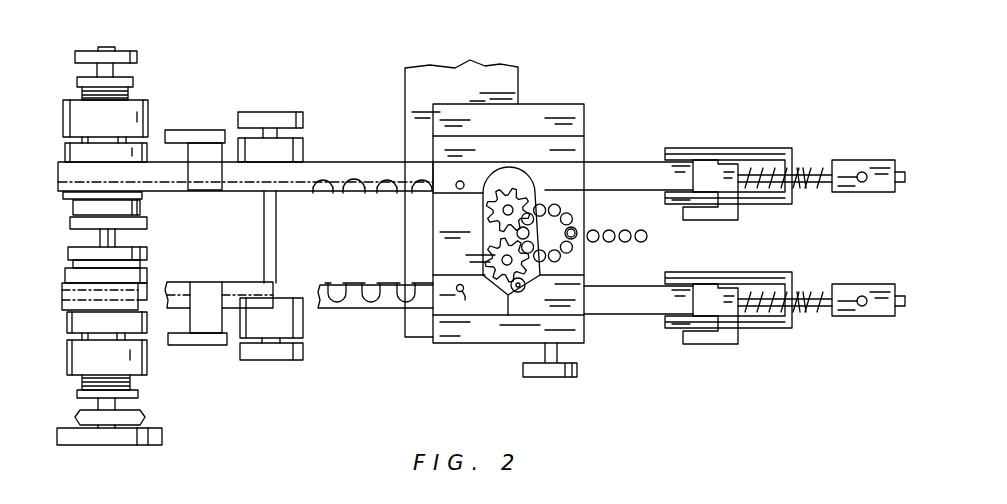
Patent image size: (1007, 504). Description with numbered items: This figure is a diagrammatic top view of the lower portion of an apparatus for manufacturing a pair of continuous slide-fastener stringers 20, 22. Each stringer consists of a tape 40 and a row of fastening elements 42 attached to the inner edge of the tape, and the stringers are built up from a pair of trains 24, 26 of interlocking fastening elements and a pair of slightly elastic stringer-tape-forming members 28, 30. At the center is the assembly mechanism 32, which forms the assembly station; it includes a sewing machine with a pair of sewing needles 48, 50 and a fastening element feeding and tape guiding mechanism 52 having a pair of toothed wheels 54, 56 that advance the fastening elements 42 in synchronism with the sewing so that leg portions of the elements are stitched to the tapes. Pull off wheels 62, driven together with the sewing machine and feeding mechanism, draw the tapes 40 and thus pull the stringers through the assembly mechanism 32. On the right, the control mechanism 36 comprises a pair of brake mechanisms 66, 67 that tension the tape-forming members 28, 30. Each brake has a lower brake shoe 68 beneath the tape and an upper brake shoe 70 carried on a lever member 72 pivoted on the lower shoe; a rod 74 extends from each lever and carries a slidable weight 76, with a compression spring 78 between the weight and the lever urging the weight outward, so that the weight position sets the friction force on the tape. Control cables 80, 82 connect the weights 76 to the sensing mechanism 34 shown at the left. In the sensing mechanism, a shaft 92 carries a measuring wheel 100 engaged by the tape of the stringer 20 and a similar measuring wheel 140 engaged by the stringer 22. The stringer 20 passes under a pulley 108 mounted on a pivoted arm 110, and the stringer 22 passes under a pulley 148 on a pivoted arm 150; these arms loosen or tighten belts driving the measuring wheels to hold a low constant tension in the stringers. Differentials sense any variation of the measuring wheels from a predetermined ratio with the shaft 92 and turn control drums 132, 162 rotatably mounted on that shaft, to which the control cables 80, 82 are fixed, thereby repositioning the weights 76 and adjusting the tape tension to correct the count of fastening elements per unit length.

The stringer 20 is at (339, 268).
The stringer 22 is at (345, 152).
The train of interlocking fastening elements 24 is at (572, 264).
The train of interlocking fastening elements 26 is at (574, 212).
The stringer-tape-forming member 28 is at (625, 295).
The stringer-tape-forming member 30 is at (612, 174).
The assembly mechanism 32 is at (558, 78).
The sensing mechanism 34 is at (112, 36).
The control mechanism 36 is at (745, 145).
The tape 40 is at (350, 300).
The fastening elements 42 is at (379, 282).
The sewing needle 48 is at (476, 303).
The sewing needle 50 is at (463, 182).
The fastening element feeding and tape guiding mechanism 52 is at (576, 105).
The toothed wheel 54 is at (526, 282).
The toothed wheel 56 is at (514, 200).
The pull off wheel 62 is at (296, 150).
The brake mechanism 66 is at (692, 274).
The brake mechanism 67 is at (680, 150).
The lower brake shoe 68 is at (712, 155).
The upper brake shoe 70 is at (768, 166).
The lever member 72 is at (736, 209).
The rod 74 is at (809, 178).
The weight 76 is at (883, 172).
The compression spring 78 is at (803, 172).
The control cable 80 is at (82, 387).
The control cable 82 is at (86, 92).
The shaft 92 is at (116, 238).
The measuring wheel 100 is at (125, 318).
The pulley 108 is at (209, 298).
The arm 110 is at (199, 337).
The control drum 132 is at (120, 357).
The measuring wheel 140 is at (143, 150).
The pulley 148 is at (203, 147).
The arm 150 is at (216, 133).
The control drum 162 is at (133, 120).